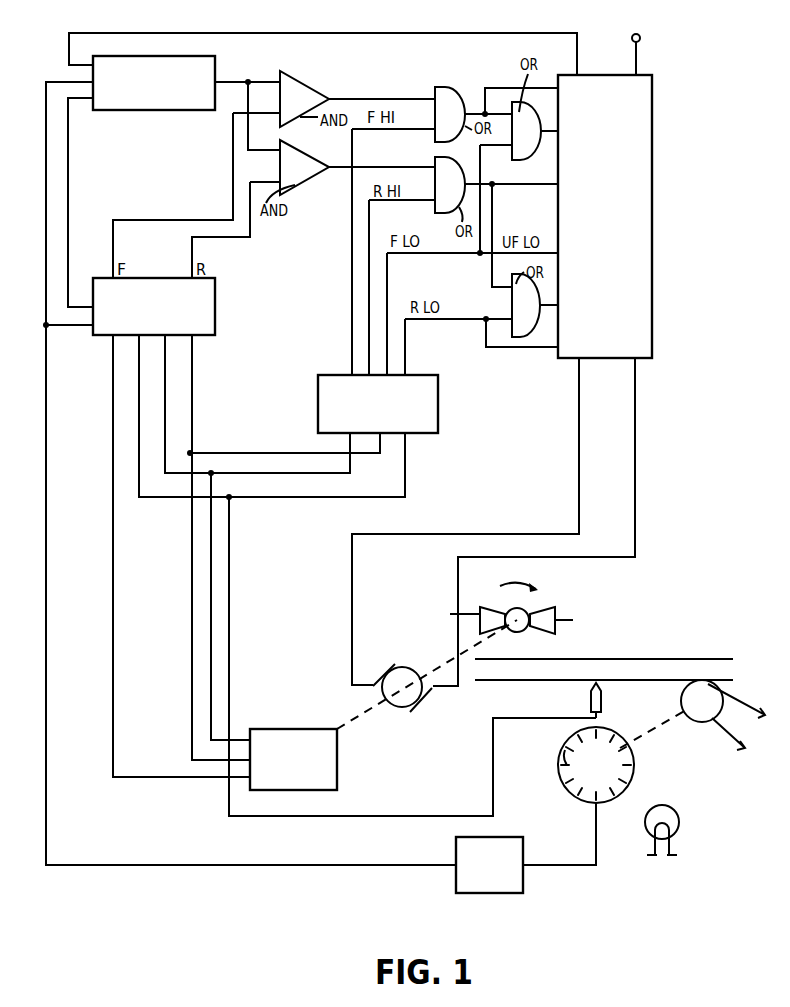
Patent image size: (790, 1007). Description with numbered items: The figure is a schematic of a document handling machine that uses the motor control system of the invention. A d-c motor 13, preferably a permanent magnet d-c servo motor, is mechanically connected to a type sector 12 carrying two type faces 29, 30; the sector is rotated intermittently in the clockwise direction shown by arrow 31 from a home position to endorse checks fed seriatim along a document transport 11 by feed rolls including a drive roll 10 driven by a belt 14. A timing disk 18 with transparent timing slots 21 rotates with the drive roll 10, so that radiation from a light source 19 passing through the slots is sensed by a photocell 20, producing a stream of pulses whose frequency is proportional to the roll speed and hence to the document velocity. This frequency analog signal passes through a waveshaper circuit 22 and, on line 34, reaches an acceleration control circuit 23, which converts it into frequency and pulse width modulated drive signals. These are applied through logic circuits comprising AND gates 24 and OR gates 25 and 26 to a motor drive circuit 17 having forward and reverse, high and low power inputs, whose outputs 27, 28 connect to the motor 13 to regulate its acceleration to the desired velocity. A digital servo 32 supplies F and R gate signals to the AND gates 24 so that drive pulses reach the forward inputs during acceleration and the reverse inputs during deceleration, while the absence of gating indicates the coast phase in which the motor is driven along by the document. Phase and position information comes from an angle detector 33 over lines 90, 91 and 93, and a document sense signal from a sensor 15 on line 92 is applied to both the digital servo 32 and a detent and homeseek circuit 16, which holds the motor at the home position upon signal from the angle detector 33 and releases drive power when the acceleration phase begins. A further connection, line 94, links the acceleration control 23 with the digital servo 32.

The drive roll 10 is at (722, 697).
The document transport 11 is at (650, 659).
The type sector 12 is at (538, 618).
The d-c motor 13 is at (400, 668).
The belt 14 is at (735, 742).
The sensor 15 is at (601, 700).
The detent and homeseek circuit 16 is at (438, 423).
The motor drive circuit 17 is at (652, 283).
The timing disk 18 is at (608, 779).
The light source 19 is at (679, 822).
The photocell 20 is at (613, 813).
The timing slots 21 is at (566, 760).
The waveshaper circuit 22 is at (456, 890).
The acceleration control circuit 23 is at (215, 70).
The AND gates 24 is at (305, 88).
The OR gates 25 is at (443, 90).
The OR gates 26 is at (530, 150).
The output 27 is at (635, 440).
The output 28 is at (579, 445).
The type face 29 is at (576, 612).
The type face 30 is at (452, 612).
The arrow 31 is at (505, 579).
The digital servo 32 is at (203, 335).
The angle detector 33 is at (283, 729).
The line 34 is at (45, 540).
The line 90 is at (211, 663).
The line 91 is at (191, 548).
The line 92 is at (230, 590).
The line 93 is at (113, 565).
The signal line 94 is at (67, 207).